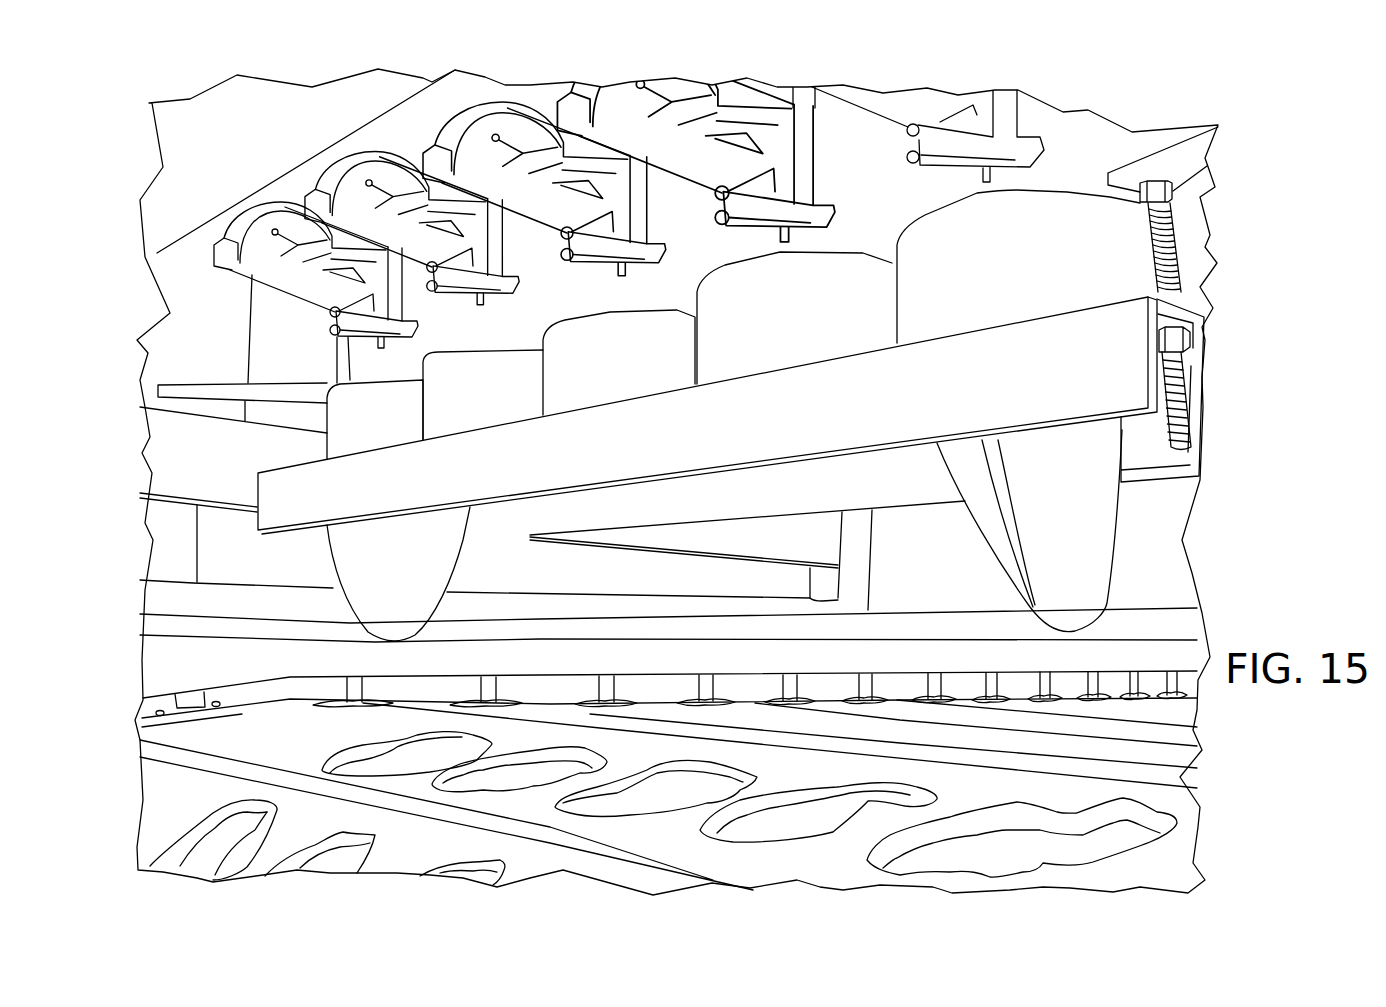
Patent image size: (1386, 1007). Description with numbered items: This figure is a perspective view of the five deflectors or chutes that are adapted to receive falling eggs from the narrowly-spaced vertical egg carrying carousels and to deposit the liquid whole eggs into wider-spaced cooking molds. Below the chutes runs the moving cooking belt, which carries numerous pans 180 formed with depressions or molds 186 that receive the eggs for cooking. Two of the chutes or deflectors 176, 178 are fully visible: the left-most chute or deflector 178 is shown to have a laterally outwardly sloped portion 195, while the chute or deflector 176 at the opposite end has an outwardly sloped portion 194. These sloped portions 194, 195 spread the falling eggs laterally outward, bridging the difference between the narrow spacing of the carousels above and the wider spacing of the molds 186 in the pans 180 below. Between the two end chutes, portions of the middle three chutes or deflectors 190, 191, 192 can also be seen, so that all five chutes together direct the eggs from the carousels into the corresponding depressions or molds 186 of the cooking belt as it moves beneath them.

The chute or deflector 176 is at (1040, 275).
The chute or deflector 178 is at (386, 438).
The pans 180 is at (668, 791).
The depressions or molds 186 is at (404, 752).
The chute or deflector 190 is at (467, 406).
The chute or deflector 191 is at (636, 370).
The chute or deflector 192 is at (807, 326).
The outwardly sloped portion 194 is at (1067, 503).
The laterally outwardly sloped portion 195 is at (372, 588).